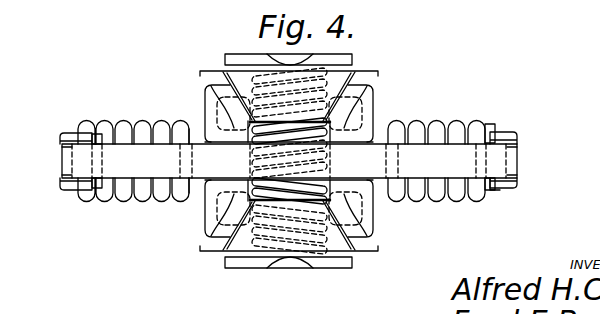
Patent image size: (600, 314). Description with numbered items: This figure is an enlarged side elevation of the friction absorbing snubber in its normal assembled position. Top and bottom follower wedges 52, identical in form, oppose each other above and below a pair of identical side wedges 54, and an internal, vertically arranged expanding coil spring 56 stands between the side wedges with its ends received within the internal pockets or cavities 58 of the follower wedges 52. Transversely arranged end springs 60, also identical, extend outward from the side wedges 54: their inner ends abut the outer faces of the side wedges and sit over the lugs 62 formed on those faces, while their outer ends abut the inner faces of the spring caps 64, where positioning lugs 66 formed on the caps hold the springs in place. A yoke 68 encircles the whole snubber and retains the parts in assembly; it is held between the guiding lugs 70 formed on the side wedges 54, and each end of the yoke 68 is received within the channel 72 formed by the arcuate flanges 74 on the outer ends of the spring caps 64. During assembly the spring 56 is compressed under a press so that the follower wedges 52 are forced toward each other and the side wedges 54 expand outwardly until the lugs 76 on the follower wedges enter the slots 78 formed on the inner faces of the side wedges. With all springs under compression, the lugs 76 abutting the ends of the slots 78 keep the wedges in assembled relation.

The follower wedges 52 is at (349, 72).
The side wedges 54 is at (193, 104).
The expanding coil spring 56 is at (265, 240).
The internal pockets or cavities 58 is at (241, 72).
The end springs 60 is at (112, 197).
The lugs 62 is at (184, 140).
The spring caps 64 is at (500, 190).
The positioning lugs 66 is at (98, 134).
The yoke 68 is at (518, 158).
The guiding lugs 70 is at (191, 87).
The channel 72 is at (62, 148).
The arcuate flanges 74 is at (60, 138).
The lugs 76 is at (366, 95).
The slots 78 is at (378, 112).